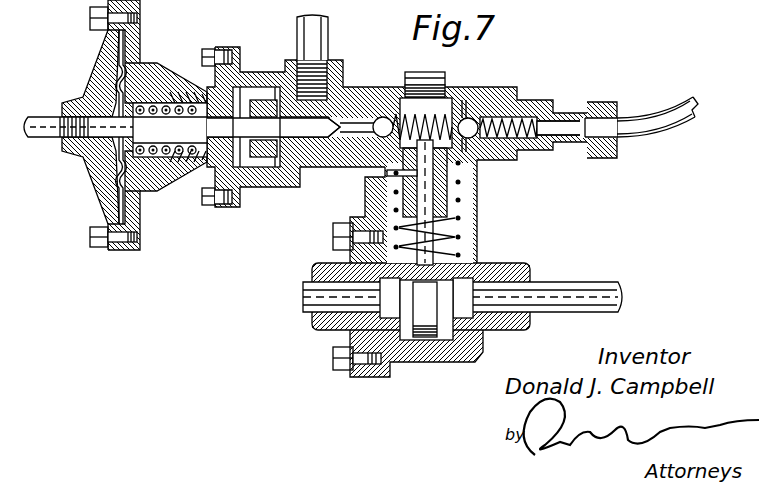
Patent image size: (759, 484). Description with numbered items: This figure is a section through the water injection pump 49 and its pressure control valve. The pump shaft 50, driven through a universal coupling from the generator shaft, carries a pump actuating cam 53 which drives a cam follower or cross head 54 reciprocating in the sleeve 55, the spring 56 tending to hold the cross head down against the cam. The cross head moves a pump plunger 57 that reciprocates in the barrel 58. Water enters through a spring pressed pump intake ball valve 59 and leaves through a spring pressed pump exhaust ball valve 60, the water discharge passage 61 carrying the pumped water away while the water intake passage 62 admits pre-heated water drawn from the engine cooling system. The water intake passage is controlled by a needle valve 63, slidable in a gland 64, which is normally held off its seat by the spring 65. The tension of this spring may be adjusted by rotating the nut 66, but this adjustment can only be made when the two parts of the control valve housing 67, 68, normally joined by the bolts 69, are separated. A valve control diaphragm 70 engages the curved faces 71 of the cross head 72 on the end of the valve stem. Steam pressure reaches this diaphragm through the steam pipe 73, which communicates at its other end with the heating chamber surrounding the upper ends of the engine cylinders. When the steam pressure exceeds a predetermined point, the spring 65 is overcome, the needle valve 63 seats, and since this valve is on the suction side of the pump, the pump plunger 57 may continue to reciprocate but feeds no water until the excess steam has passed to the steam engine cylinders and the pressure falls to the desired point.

The water injection pump 49 is at (415, 368).
The pump shaft 50 is at (578, 292).
The pump actuating cam 53 is at (430, 338).
The cam follower or cross head 54 is at (458, 262).
The sleeve 55 is at (470, 221).
The spring 56 is at (388, 201).
The pump plunger 57 is at (458, 198).
The barrel 58 is at (385, 176).
The spring pressed pump intake ball valve 59 is at (381, 116).
The spring pressed pump exhaust ball valve 60 is at (476, 120).
The water discharge passage 61 is at (642, 128).
The water intake passage 62 is at (323, 41).
The needle valve 63 is at (323, 133).
The gland 64 is at (250, 148).
The spring 65 is at (152, 103).
The nut 66 is at (185, 160).
The control valve housing part 67 is at (177, 90).
The control valve housing part 68 is at (258, 72).
The bolts 69 is at (207, 48).
The valve control diaphragm 70 is at (110, 161).
The curved faces 71 is at (140, 66).
The cross head 72 is at (155, 188).
The steam pipe 73 is at (33, 116).